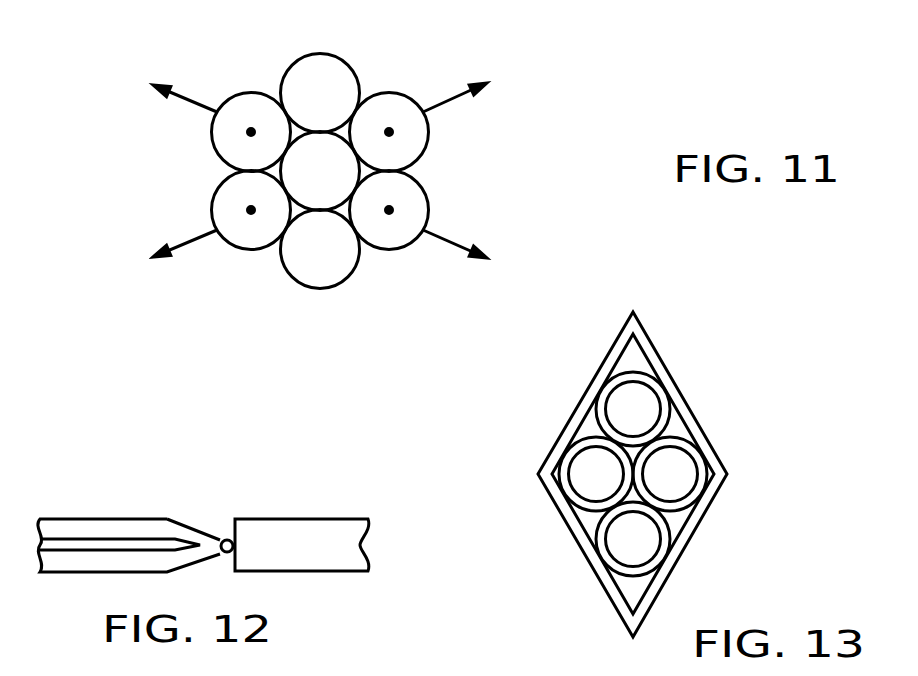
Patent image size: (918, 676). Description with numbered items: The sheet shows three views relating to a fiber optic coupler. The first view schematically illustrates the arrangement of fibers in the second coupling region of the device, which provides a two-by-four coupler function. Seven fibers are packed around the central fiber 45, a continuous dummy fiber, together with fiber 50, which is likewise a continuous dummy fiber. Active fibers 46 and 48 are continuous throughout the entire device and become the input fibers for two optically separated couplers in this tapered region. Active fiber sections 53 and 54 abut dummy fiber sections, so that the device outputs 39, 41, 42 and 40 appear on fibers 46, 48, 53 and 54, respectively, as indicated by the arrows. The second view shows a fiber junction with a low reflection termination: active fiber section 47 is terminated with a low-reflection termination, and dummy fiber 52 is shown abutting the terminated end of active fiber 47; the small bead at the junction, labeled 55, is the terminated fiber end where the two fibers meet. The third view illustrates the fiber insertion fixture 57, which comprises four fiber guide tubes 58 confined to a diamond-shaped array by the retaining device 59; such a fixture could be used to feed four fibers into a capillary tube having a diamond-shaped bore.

In FIG. 11, the device output 39 is at (200, 116).
In FIG. 11, the device output 40 is at (203, 226).
In FIG. 11, the device output 41 is at (446, 102).
In FIG. 11, the device output 42 is at (447, 240).
In FIG. 11, the central fiber 45 is at (317, 157).
In FIG. 11, the active fiber 46 is at (249, 93).
In FIG. 12, the active fiber section 47 is at (53, 519).
In FIG. 11, the active fiber 48 is at (408, 97).
In FIG. 11, the fiber 50 is at (345, 282).
In FIG. 11, the dummy fiber 52 is at (319, 54).
In FIG. 12, the dummy fiber 52 is at (307, 519).
In FIG. 11, the active fiber section 53 is at (401, 245).
In FIG. 11, the active fiber section 54 is at (246, 249).
In FIG. 12, the fused ball tip 55 is at (222, 540).
In FIG. 13, the fixture 57 is at (553, 510).
In FIG. 13, the fiber guide tubes 58 is at (691, 440).
In FIG. 13, the retaining device 59 is at (578, 414).